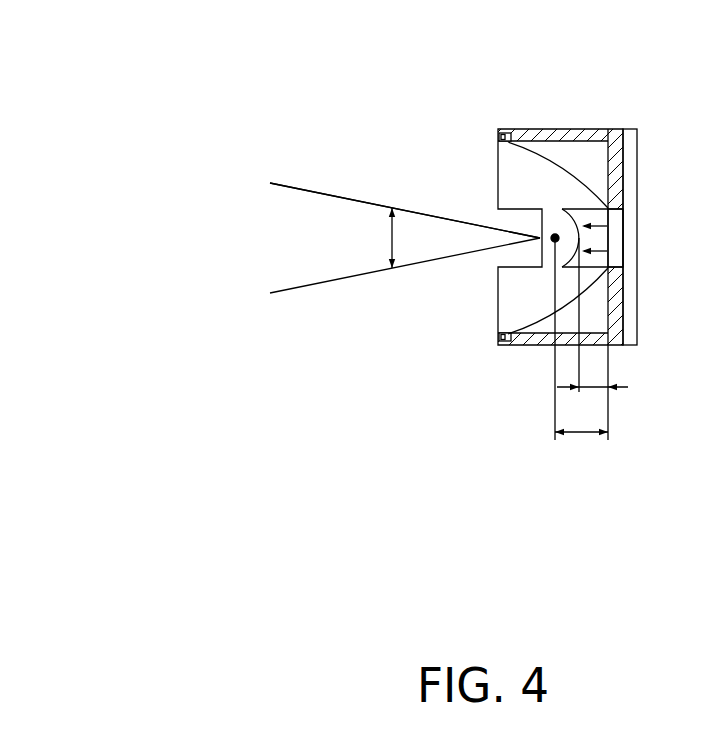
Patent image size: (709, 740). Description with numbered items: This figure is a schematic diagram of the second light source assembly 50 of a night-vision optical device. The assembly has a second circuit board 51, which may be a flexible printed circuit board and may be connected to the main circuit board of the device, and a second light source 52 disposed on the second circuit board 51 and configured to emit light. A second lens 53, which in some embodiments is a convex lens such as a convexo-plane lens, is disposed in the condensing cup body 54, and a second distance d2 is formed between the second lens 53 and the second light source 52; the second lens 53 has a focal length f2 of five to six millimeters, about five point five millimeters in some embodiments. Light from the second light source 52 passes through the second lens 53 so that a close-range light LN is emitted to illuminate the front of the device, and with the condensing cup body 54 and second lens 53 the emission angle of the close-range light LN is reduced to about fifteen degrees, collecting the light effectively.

The second light source assembly 50 is at (262, 56).
The second circuit board 51 is at (632, 162).
The second light source 52 is at (617, 220).
The second lens 53 is at (552, 212).
The condensing cup body 54 is at (537, 169).
The close-range light LN is at (449, 190).
The second distance d2 is at (592, 404).
The focal length of the second lens f2 is at (581, 448).